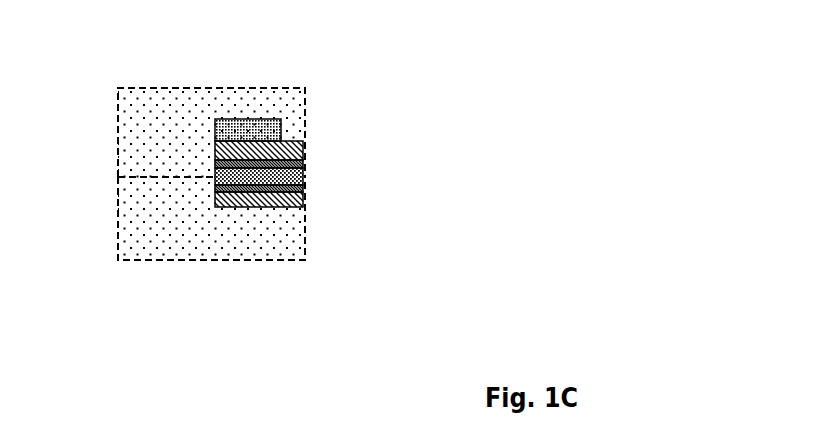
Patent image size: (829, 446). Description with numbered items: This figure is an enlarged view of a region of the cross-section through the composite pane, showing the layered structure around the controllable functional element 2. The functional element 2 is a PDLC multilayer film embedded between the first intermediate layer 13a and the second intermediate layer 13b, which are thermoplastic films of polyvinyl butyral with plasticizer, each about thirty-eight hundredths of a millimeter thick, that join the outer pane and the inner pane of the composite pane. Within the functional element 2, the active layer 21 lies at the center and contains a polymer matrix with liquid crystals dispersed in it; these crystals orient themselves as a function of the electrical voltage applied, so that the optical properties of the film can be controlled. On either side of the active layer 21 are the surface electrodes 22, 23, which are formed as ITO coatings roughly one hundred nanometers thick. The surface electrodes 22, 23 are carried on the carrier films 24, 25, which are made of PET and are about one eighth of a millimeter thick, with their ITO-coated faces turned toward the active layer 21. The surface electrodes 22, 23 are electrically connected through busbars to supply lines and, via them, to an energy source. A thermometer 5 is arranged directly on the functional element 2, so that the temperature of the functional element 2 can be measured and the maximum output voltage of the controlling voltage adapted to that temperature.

The thermometer 5 is at (240, 118).
The first intermediate layer 13a is at (280, 106).
The second intermediate layer 13b is at (277, 250).
The controllable functional element 2 is at (326, 173).
The carrier film 24 is at (278, 153).
The surface electrode 22 is at (281, 163).
The active layer 21 is at (290, 177).
The surface electrode 23 is at (288, 189).
The carrier film 25 is at (298, 215).